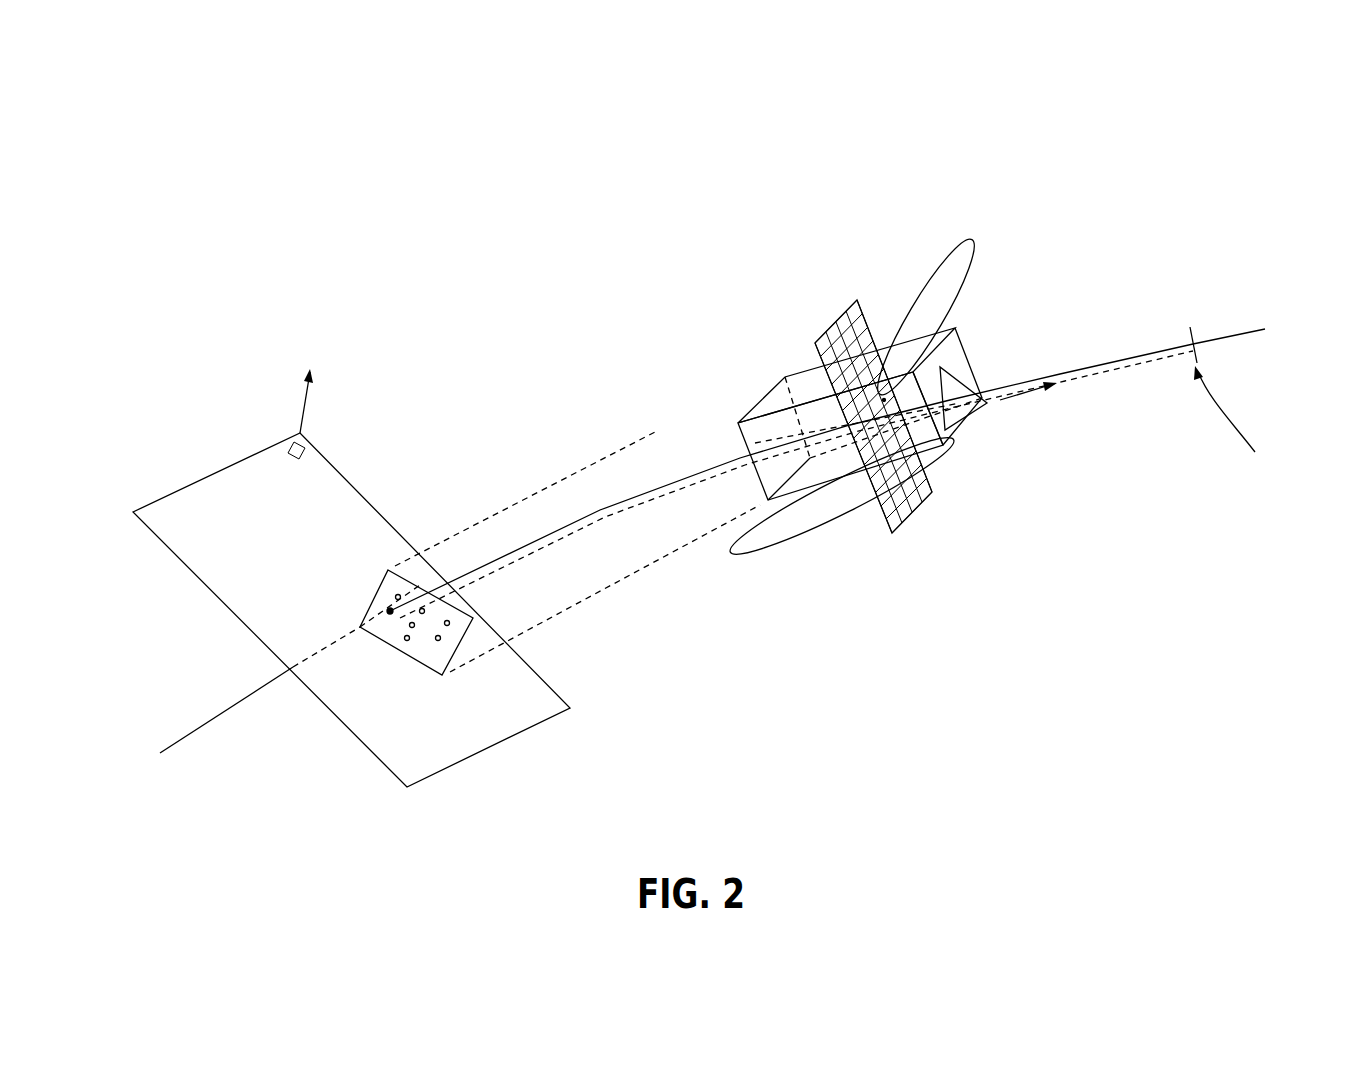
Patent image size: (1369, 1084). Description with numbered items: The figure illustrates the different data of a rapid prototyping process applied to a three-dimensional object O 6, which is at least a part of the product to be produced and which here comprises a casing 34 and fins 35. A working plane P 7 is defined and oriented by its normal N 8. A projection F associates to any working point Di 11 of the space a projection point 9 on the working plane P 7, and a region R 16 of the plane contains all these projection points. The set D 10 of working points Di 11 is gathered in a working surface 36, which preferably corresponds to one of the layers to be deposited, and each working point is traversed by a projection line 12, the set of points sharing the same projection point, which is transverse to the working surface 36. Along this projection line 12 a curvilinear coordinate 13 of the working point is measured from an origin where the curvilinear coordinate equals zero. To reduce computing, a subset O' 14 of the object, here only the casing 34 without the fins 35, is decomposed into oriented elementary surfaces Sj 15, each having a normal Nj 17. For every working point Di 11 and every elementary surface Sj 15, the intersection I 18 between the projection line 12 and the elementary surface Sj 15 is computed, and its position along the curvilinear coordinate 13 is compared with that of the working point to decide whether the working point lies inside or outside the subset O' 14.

The object O 6 is at (745, 519).
The working plane P 7 is at (158, 505).
The normal N 8 is at (329, 400).
The projection point F(Di).p 9 is at (383, 610).
The set D of working points 10 is at (898, 512).
The working point Di 11 is at (884, 400).
The line F{F(Di).p} 12 is at (595, 506).
The curvilinear coordinate F(Di).v 13 is at (539, 556).
The subset O' 14 is at (944, 452).
The elementary surface Sj 15 is at (960, 423).
The region R 16 is at (412, 672).
The normal Nj 17 is at (1018, 395).
The intersection I 18 is at (954, 381).
The casing 34 is at (870, 450).
The fins 35 is at (975, 246).
The working plane or working surface 36 is at (836, 306).